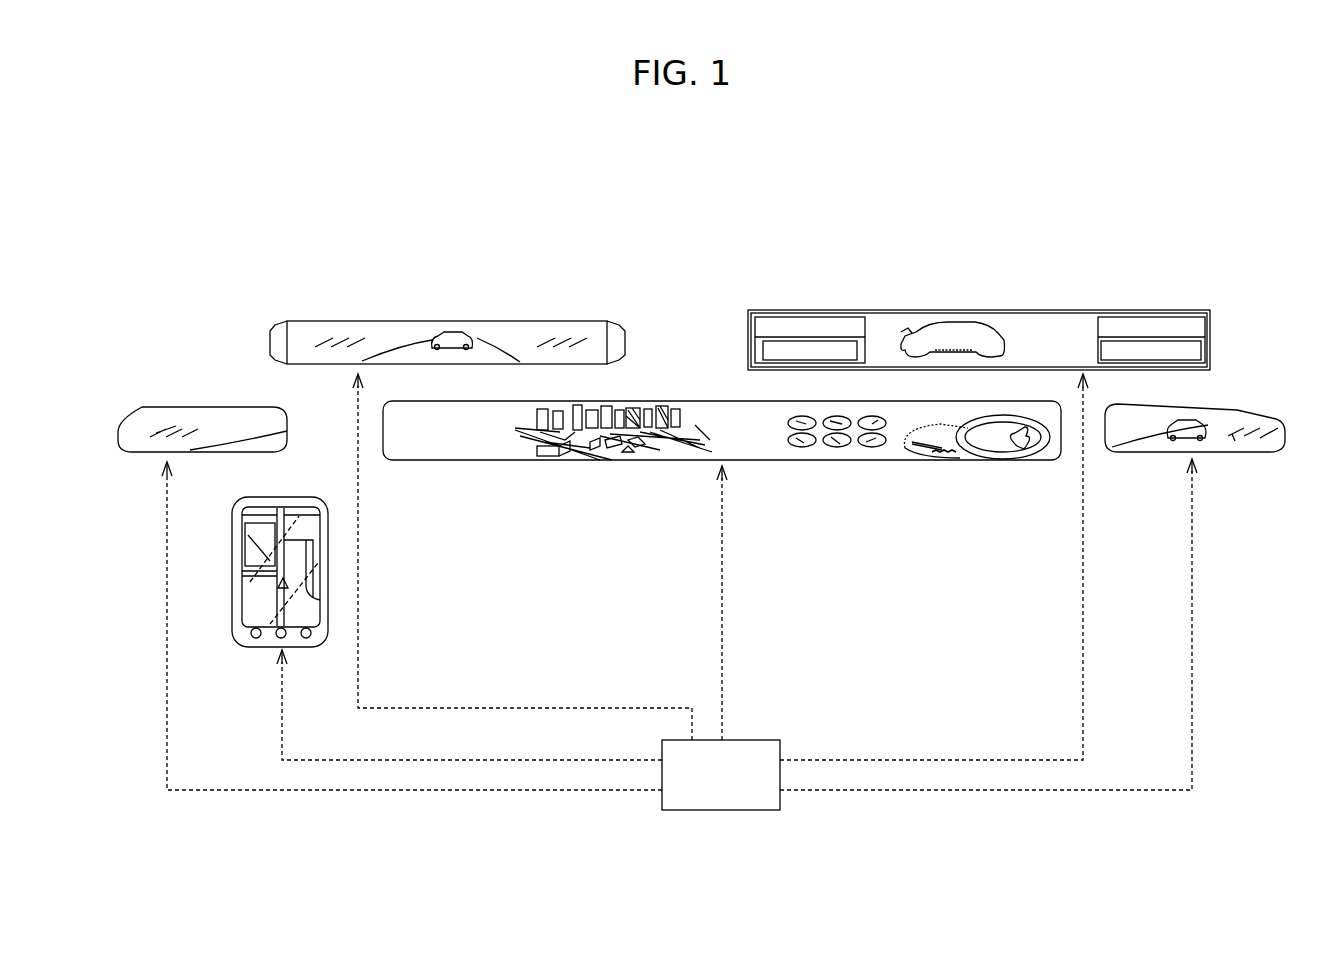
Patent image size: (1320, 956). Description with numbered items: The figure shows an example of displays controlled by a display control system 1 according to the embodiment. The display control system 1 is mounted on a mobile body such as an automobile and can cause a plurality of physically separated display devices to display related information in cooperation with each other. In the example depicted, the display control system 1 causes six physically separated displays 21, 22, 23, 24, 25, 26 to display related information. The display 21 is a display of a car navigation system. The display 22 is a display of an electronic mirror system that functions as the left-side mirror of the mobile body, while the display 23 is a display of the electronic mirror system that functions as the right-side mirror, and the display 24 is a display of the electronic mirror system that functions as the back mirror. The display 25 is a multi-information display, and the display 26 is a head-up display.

The display control system 1 is at (750, 740).
The display 21 is at (303, 497).
The display 22 is at (168, 409).
The display 23 is at (1232, 408).
The display 24 is at (552, 320).
The display 25 is at (666, 401).
The display 26 is at (1128, 311).